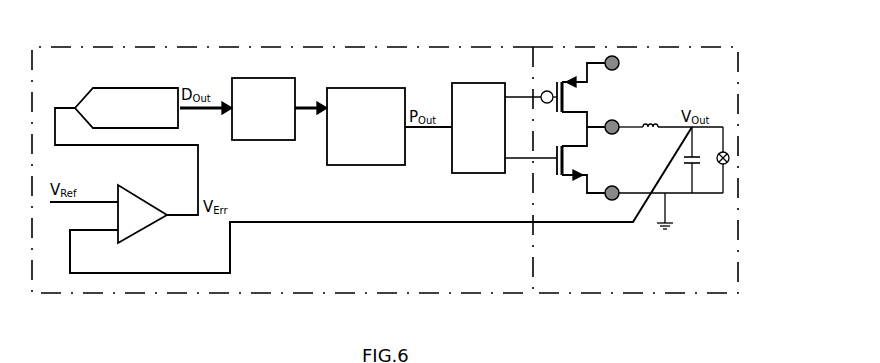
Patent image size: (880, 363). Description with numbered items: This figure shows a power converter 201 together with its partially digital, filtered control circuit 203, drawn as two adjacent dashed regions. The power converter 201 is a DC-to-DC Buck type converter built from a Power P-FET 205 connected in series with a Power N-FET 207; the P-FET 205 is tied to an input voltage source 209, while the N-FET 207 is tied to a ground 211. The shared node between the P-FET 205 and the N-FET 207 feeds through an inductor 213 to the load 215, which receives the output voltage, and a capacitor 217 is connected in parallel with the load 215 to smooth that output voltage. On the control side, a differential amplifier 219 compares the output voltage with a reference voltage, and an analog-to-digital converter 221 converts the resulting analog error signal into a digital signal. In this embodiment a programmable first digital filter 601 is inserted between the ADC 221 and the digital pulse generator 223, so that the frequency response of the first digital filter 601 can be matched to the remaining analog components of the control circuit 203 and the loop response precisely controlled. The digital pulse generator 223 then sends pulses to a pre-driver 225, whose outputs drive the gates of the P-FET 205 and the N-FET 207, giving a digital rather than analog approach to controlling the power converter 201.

The power converter 201 is at (650, 47).
The control circuit 203 is at (326, 47).
The Power P-FET 205 is at (570, 100).
The Power N-FET 207 is at (570, 160).
The input voltage source 209 is at (622, 63).
The ground 211 is at (673, 212).
The inductor 213 is at (650, 123).
The load 215 is at (722, 150).
The capacitor 217 is at (683, 160).
The differential amplifier 219 is at (152, 228).
The analog-to-digital converter (ADC) 221 is at (110, 88).
The digital pulse generator 223 is at (360, 88).
The pre-driver 225 is at (467, 83).
The first digital filter 601 is at (250, 78).